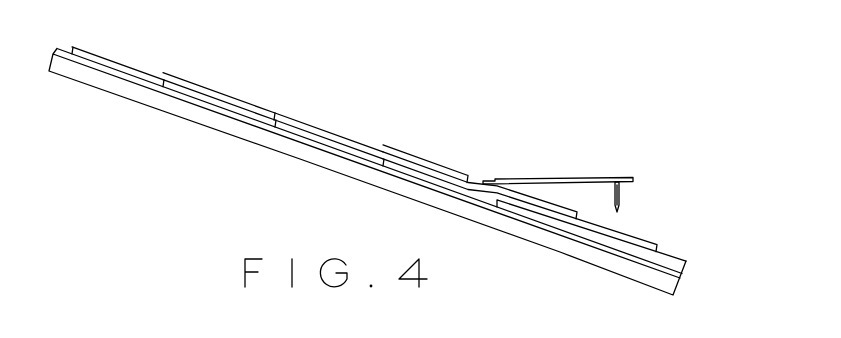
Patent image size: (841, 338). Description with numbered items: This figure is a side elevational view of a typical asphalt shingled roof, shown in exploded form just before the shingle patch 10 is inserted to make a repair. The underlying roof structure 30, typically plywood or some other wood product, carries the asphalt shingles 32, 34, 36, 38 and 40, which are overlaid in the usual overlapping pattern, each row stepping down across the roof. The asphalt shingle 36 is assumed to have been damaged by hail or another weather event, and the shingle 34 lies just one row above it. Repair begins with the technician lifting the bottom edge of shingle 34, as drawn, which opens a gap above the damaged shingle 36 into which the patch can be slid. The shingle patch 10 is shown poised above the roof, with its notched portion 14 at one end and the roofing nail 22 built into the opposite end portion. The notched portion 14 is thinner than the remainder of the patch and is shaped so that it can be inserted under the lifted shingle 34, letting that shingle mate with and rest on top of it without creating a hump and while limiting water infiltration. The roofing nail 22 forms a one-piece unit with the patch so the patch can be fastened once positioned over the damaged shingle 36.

The shingle patch 10 is at (545, 165).
The notched portion 14 is at (492, 177).
The roofing nail 22 is at (620, 200).
The roof structure 30 is at (90, 77).
The asphalt shingle 32 is at (230, 92).
The asphalt shingle 34 is at (415, 160).
The asphalt shingle 36 is at (540, 200).
The asphalt shingle 38 is at (627, 243).
The asphalt shingle 40 is at (670, 262).